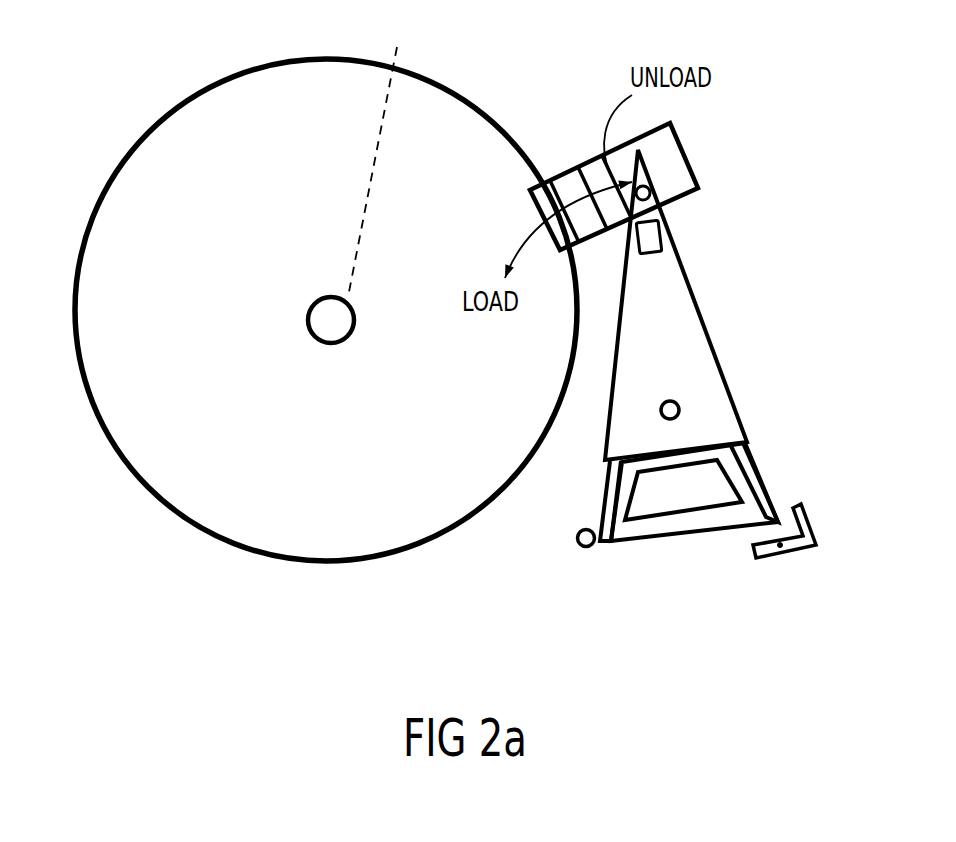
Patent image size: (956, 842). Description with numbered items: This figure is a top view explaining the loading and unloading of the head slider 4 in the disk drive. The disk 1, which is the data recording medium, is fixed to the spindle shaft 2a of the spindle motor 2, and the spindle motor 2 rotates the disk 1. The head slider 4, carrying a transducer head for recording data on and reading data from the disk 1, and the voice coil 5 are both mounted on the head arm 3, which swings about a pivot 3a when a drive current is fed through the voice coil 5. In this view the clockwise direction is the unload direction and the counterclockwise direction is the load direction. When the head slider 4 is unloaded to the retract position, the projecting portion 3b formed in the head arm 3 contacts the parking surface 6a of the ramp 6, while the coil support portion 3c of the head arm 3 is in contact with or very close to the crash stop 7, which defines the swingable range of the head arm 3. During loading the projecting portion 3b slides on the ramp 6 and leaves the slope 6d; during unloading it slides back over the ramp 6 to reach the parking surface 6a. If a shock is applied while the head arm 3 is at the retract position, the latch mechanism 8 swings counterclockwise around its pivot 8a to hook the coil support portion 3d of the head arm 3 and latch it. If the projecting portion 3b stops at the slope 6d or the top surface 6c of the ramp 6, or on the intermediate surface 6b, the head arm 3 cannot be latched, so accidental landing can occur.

The disk 1 is at (228, 142).
The spindle motor 2 is at (376, 152).
The spindle shaft 2a is at (331, 296).
The head arm 3 is at (723, 408).
The pivot 3a is at (677, 400).
The projecting portion 3b is at (651, 201).
The coil support portion 3c is at (605, 545).
The coil support portion 3d is at (757, 475).
The head slider 4 is at (661, 246).
The voice coil 5 is at (693, 527).
The ramp 6 is at (696, 141).
The parking surface 6a is at (680, 172).
The cassette slot 6b is at (578, 177).
The top surface 6c is at (557, 172).
The slope 6d is at (530, 188).
The crash stop 7 is at (578, 550).
The latch mechanism 8 is at (802, 547).
The pivot 8a is at (787, 552).